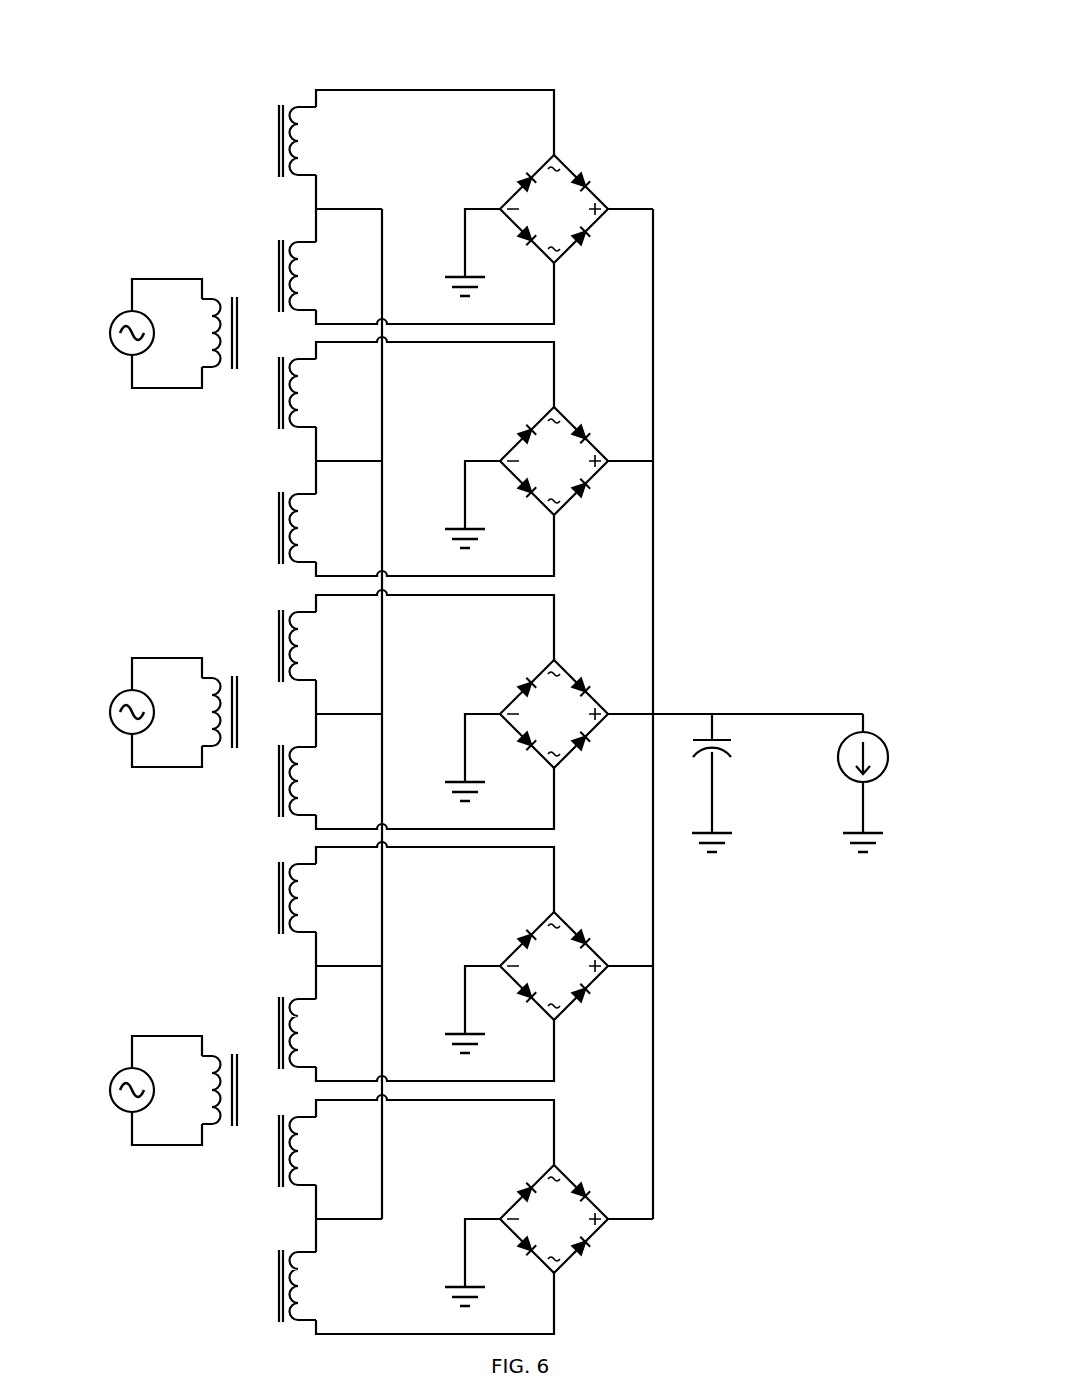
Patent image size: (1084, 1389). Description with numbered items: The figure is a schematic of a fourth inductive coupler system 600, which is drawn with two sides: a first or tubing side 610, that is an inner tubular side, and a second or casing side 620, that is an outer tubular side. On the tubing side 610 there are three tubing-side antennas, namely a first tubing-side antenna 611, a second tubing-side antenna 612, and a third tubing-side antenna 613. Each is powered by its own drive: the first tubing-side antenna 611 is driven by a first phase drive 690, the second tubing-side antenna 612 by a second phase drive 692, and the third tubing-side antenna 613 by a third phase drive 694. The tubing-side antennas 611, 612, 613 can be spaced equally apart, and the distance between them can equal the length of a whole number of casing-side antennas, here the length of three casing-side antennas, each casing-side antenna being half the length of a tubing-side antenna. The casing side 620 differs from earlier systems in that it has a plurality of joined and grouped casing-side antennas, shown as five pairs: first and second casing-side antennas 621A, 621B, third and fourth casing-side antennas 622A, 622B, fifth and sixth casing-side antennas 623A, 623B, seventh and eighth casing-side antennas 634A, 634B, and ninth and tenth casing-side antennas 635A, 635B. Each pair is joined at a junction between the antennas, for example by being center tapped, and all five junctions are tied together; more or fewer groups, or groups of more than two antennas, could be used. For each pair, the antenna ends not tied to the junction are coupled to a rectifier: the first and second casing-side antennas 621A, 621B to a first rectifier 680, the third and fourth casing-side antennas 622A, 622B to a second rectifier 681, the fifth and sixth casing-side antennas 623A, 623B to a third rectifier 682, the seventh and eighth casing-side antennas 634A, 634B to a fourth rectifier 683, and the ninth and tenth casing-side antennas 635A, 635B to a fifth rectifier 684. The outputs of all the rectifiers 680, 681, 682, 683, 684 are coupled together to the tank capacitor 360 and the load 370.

The fourth inductive coupler system 600 is at (820, 27).
The tubing side 610 is at (65, 86).
The casing side 620 is at (273, 86).
The first tubing-side antenna 611 is at (203, 333).
The second tubing-side antenna 612 is at (203, 712).
The third tubing-side antenna 613 is at (203, 1090).
The first casing-side antenna 621A is at (319, 141).
The second casing-side antenna 621B is at (319, 276).
The third casing-side antenna 622A is at (319, 393).
The fourth casing-side antenna 622B is at (319, 528).
The fifth casing-side antenna 623A is at (319, 646).
The sixth casing-side antenna 623B is at (319, 781).
The seventh casing-side antenna 634A is at (319, 898).
The eighth casing-side antenna 634B is at (319, 1033).
The ninth casing-side antenna 635A is at (319, 1151).
The tenth casing-side antenna 635B is at (319, 1286).
The first rectifier 680 is at (554, 209).
The second rectifier 681 is at (554, 461).
The third rectifier 682 is at (554, 714).
The fourth rectifier 683 is at (554, 966).
The fifth rectifier 684 is at (554, 1219).
The first phase drive 690 is at (110, 333).
The second phase drive 692 is at (110, 712).
The third phase drive 694 is at (110, 1090).
The tank capacitor 360 is at (735, 783).
The load 370 is at (889, 783).